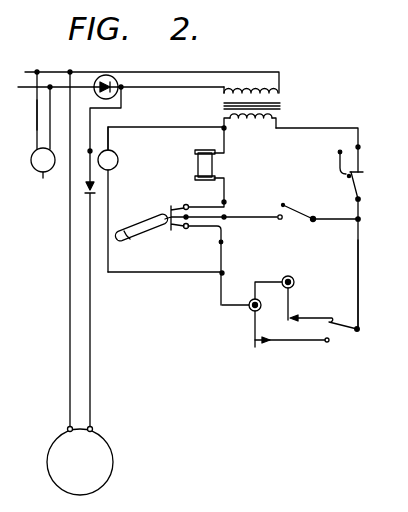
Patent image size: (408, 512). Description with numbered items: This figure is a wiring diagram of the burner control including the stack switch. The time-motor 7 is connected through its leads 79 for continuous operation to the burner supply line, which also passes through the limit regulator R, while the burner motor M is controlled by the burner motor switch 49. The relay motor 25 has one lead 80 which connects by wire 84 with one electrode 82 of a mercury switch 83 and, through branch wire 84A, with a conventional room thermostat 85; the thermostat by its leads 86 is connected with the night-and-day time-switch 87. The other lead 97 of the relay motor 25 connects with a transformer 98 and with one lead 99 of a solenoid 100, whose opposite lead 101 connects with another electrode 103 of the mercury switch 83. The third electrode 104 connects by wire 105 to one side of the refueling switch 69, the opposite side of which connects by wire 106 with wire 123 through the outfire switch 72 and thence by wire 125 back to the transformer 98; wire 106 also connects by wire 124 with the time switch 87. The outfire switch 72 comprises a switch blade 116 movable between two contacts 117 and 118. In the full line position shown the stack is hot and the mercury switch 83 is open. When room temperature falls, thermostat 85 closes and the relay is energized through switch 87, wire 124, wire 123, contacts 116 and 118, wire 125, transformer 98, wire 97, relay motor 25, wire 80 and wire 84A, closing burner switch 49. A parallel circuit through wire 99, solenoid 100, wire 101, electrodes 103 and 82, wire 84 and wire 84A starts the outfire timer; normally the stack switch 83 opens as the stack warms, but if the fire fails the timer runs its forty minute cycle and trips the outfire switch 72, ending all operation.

The limit regulator R is at (114, 76).
The time-motor 7 is at (43, 171).
The leads 79 is at (40, 129).
The burner motor switch 49 is at (86, 193).
The lead 80 is at (110, 182).
The relay motor 25 is at (118, 160).
The lead 97 is at (110, 137).
The transformer 98 is at (285, 106).
The lead 99 is at (226, 137).
The solenoid 100 is at (213, 162).
The lead 101 is at (226, 182).
The wire 125 is at (318, 128).
The mercury switch 83 is at (137, 226).
The electrode 82 is at (169, 231).
The electrode 103 is at (172, 207).
The third electrode 104 is at (176, 228).
The wire 84 is at (223, 258).
The branch wire 84A is at (221, 293).
The wire 105 is at (277, 220).
The refueling switch 69 is at (292, 222).
The wire 106 is at (340, 220).
The contact 117 is at (338, 167).
The outfire switch 72 is at (340, 187).
The contact 118 is at (362, 161).
The switch blade 116 is at (357, 183).
The wire 123 is at (361, 205).
The wire 124 is at (360, 273).
The room thermostat 85 is at (258, 293).
The leads 86 is at (303, 322).
The time-switch 87 is at (332, 342).
The burner motor M is at (113, 457).